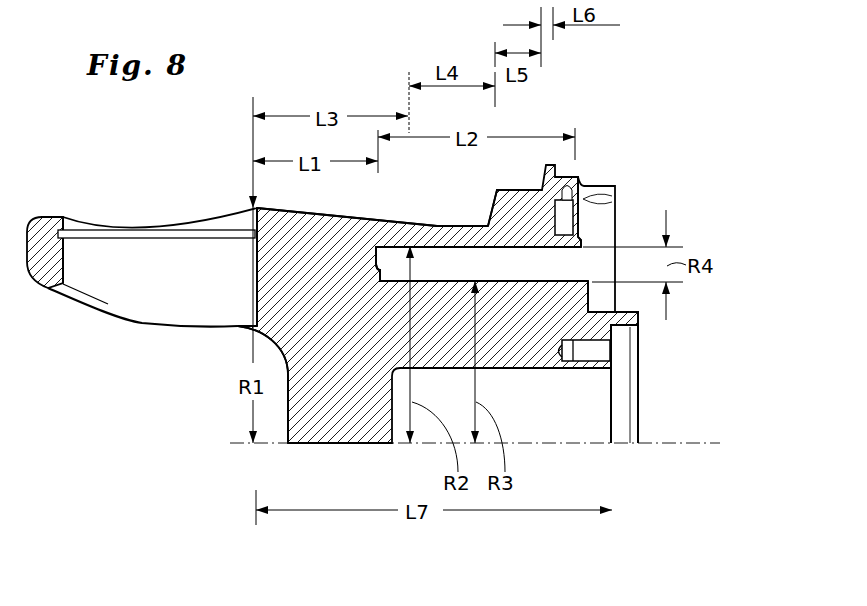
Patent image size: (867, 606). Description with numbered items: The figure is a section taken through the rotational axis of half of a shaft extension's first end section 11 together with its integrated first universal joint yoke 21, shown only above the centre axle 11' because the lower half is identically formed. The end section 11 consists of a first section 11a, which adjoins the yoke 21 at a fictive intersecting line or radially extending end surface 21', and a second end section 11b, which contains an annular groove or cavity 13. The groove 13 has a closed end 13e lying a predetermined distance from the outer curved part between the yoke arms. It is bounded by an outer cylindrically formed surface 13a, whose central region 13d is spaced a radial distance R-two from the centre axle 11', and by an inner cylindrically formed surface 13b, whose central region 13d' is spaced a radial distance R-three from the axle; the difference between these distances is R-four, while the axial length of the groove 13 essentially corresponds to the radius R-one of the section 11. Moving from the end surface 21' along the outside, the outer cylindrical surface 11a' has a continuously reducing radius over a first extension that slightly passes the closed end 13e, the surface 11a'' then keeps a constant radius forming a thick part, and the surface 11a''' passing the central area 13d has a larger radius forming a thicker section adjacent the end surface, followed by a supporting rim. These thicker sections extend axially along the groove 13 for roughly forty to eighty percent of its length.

The first end section 11 is at (396, 289).
The centre axle 11' is at (475, 450).
The first section 11a is at (273, 325).
The outer cylindrical surface 11a' is at (347, 203).
The outer cylindrical surface with thick part 11a'' is at (437, 187).
The outer cylindrical surface with thicker section 11a''' is at (489, 192).
The second end section 11b is at (563, 328).
The groove or cavity 13 is at (476, 278).
The outer cylindrically formed surface 13a is at (421, 243).
The inner cylindrically formed surface 13b is at (434, 279).
The central region of outer surface 13d is at (540, 200).
The central region of inner surface 13d' is at (598, 230).
The closed end 13e is at (378, 263).
The universal joint yoke 21 is at (142, 277).
The end surface / fictive intersecting line 21' is at (215, 290).